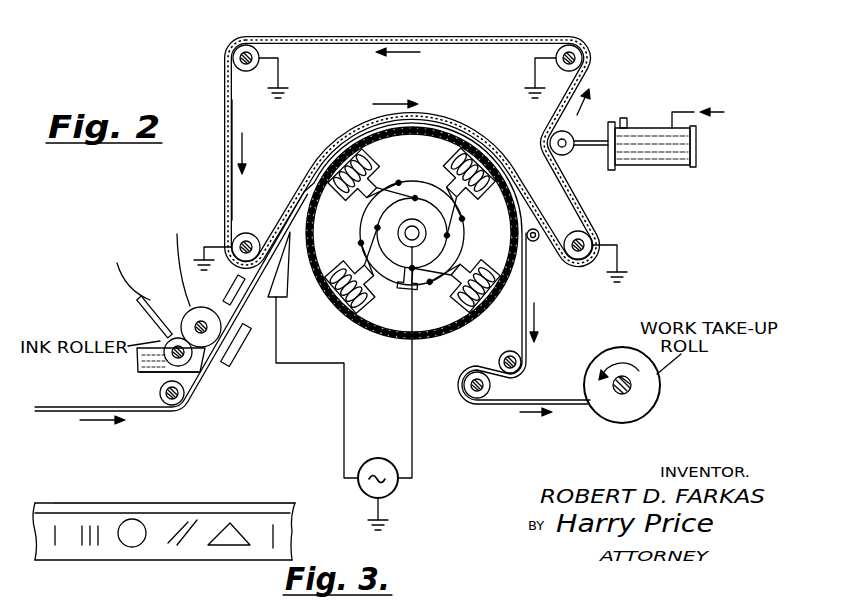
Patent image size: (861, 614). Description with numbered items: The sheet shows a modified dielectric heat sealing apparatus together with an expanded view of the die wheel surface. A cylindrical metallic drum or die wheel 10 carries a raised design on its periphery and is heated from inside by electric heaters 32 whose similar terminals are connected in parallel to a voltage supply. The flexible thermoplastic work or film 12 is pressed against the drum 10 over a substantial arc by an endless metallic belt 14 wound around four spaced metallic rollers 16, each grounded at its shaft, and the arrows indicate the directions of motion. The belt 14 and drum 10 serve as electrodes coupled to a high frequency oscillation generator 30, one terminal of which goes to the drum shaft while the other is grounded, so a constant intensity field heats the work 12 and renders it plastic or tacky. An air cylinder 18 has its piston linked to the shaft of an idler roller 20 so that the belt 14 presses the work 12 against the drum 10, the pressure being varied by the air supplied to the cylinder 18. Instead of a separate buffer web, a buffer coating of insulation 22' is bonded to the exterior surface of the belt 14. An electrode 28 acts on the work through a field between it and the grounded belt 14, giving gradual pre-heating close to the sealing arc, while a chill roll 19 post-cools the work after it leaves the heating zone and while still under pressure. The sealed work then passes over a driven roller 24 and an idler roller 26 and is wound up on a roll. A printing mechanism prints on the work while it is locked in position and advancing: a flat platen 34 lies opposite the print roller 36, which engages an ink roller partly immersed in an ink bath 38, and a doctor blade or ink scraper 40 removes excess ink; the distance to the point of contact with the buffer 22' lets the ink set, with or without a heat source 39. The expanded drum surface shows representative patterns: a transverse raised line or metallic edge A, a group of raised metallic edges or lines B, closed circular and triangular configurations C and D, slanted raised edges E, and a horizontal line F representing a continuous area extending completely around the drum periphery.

In FIG. 2, the drum or die wheel 10 is at (388, 344).
In FIG. 2, the work or film 12 is at (68, 410).
In FIG. 2, the endless metallic belt 14 is at (483, 42).
In FIG. 2, the metallic rollers 16 is at (248, 72).
In FIG. 2, the air cylinder 18 is at (642, 127).
In FIG. 2, the chill roll 19 is at (535, 244).
In FIG. 2, the idler roller 20 is at (569, 137).
In FIG. 2, the buffer coating of insulation 22' is at (203, 160).
In FIG. 2, the driven roller 24 is at (512, 351).
In FIG. 2, the idler roller 26 is at (480, 372).
In FIG. 2, the electrode 28 is at (281, 302).
In FIG. 2, the high frequency oscillation generator 30 is at (379, 458).
In FIG. 2, the electric heaters 32 is at (343, 249).
In FIG. 2, the flat platen 34 is at (260, 363).
In FIG. 2, the print roller 36 is at (186, 308).
In FIG. 2, the ink bath 38 is at (152, 376).
In FIG. 2, the heat source 39 is at (226, 291).
In FIG. 2, the doctor blade or ink scraper 40 is at (138, 308).
In FIG. 3, the transverse raised line or metallic edge A is at (55, 548).
In FIG. 3, the raised metallic edges or lines B is at (86, 548).
In FIG. 3, the closed circular configuration C is at (132, 548).
In FIG. 3, the closed triangular configuration D is at (230, 548).
In FIG. 3, the slanted raised edges E is at (173, 548).
In FIG. 3, the horizontal line F is at (62, 508).